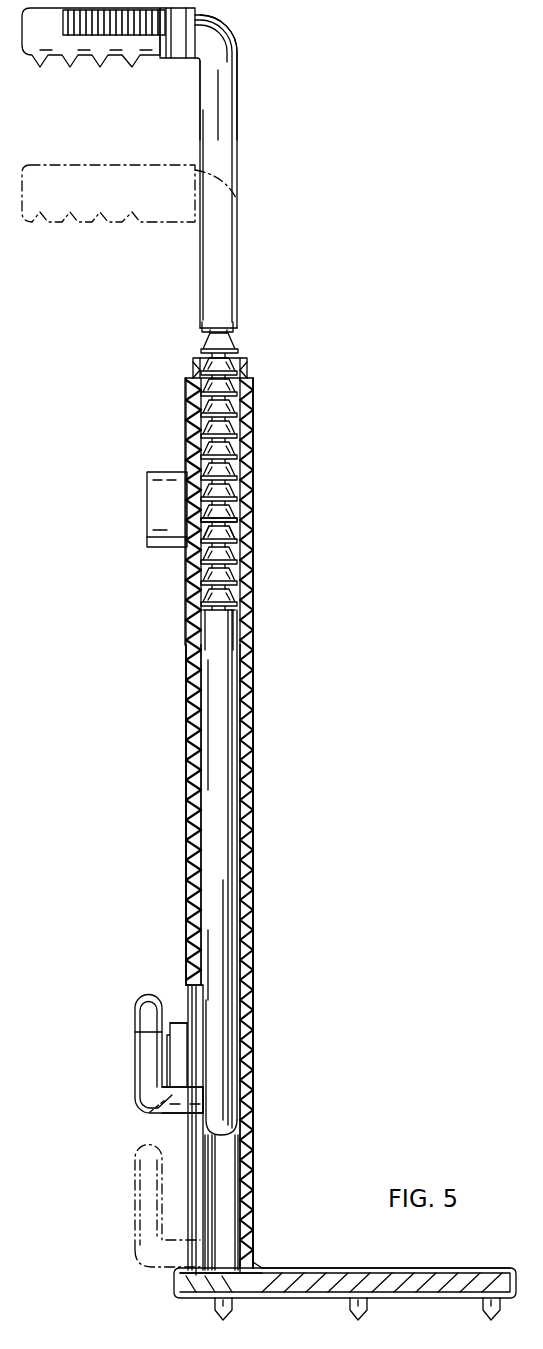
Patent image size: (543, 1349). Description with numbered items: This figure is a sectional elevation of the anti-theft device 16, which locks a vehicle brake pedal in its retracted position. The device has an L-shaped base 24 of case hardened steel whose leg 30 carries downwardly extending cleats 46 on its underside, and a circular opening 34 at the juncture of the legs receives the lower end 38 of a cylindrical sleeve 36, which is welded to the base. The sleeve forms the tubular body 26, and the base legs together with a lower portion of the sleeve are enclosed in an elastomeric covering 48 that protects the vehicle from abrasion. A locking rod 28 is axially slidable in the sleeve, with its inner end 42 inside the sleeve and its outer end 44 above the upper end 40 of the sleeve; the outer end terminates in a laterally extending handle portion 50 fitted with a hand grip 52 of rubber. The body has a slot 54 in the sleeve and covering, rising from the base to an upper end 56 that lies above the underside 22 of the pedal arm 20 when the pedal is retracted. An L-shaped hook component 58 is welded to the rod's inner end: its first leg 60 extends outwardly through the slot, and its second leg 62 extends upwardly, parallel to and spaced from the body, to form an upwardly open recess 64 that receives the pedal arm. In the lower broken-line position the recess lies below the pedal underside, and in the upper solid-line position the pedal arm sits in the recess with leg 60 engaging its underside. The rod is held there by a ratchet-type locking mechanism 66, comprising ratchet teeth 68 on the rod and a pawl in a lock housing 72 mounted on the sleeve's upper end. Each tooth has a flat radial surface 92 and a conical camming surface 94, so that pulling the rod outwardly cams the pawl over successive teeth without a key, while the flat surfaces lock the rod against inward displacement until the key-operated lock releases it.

The anti-theft device 16 is at (352, 474).
The pedal arm 20 is at (180, 1057).
The underside 22 is at (160, 1102).
The base 24 is at (362, 1267).
The tubular body 26 is at (255, 674).
The locking rod 28 is at (237, 264).
The leg 30 is at (385, 1282).
The circular opening 34 is at (232, 1284).
The cylindrical sleeve 36 is at (247, 802).
The lower end 38 is at (250, 1266).
The upper end 40 is at (243, 367).
The inner end 42 is at (227, 937).
The outer end 44 is at (222, 107).
The cleats 46 is at (213, 1312).
The covering 48 is at (254, 724).
The handle portion 50 is at (197, 34).
The hand grip 52 is at (130, 170).
The slot 54 is at (205, 1048).
The upper end 56 is at (193, 987).
The hook component 58 is at (133, 1010).
The first leg 60 is at (195, 1100).
The second leg 62 is at (150, 1034).
The recess 64 is at (180, 1017).
The ratchet-type locking mechanism 66 is at (145, 570).
The ratchet teeth 68 is at (240, 348).
The lock housing 72 is at (183, 447).
The flat surface 92 is at (238, 537).
The conical camming surface 94 is at (240, 511).